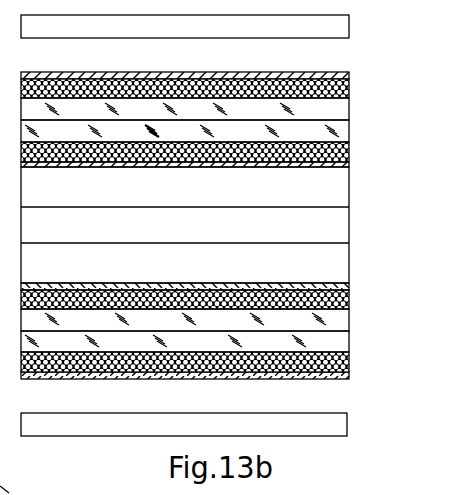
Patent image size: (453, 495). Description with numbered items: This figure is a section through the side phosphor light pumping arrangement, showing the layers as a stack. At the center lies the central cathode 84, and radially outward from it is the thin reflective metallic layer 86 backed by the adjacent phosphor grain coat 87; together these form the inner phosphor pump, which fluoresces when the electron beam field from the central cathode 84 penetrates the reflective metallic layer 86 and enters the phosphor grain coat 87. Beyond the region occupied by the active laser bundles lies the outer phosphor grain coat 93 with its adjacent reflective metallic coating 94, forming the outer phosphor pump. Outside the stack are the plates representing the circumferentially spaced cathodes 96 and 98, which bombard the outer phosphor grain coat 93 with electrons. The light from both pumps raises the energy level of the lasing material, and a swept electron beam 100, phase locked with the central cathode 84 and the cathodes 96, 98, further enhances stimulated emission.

The central cathode 84 is at (191, 239).
The reflective metallic layer 86 is at (349, 167).
The phosphor grain coat 87 is at (349, 150).
The outer phosphor grain coat 93 is at (349, 91).
The reflective metallic coating 94 is at (349, 75).
The cathode 96 is at (349, 23).
The cathode 98 is at (347, 423).
The electron beam 100 is at (22, 489).